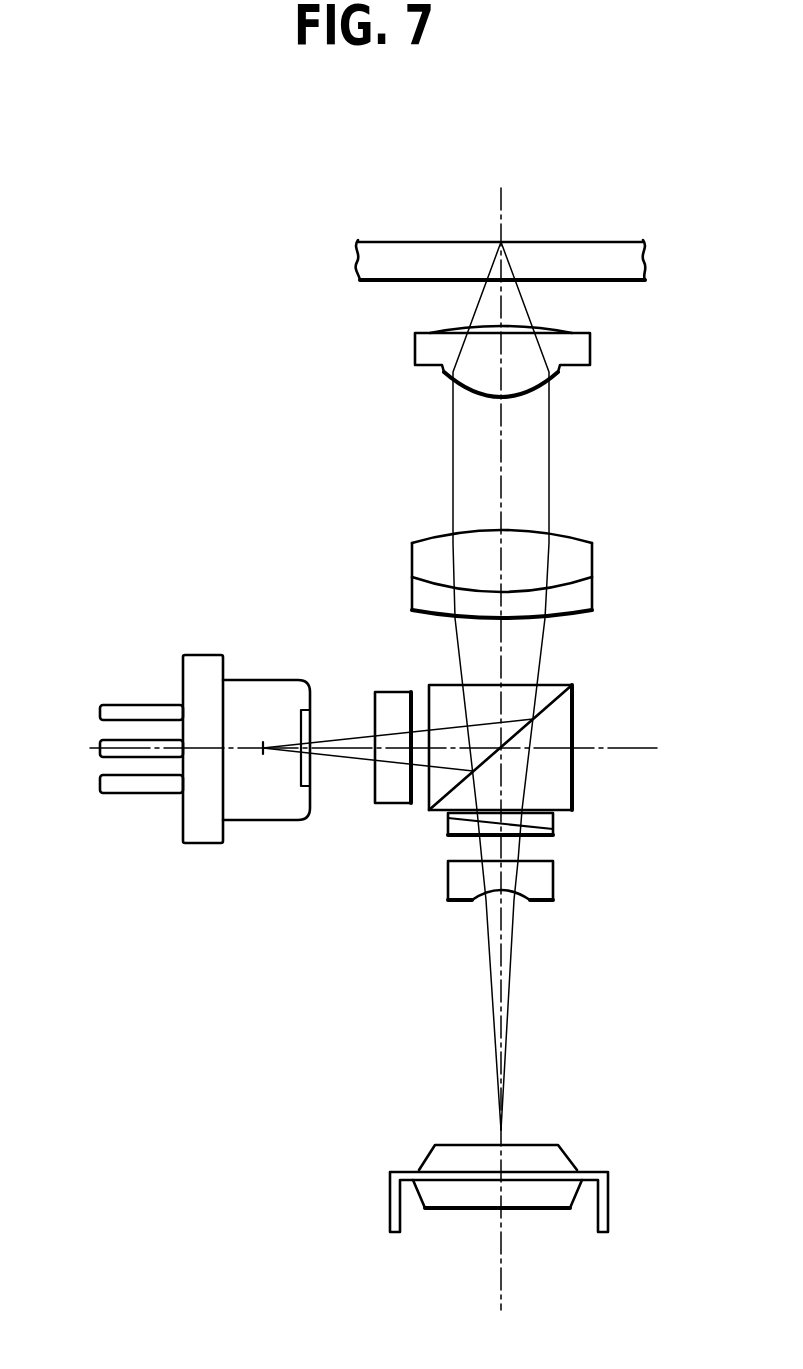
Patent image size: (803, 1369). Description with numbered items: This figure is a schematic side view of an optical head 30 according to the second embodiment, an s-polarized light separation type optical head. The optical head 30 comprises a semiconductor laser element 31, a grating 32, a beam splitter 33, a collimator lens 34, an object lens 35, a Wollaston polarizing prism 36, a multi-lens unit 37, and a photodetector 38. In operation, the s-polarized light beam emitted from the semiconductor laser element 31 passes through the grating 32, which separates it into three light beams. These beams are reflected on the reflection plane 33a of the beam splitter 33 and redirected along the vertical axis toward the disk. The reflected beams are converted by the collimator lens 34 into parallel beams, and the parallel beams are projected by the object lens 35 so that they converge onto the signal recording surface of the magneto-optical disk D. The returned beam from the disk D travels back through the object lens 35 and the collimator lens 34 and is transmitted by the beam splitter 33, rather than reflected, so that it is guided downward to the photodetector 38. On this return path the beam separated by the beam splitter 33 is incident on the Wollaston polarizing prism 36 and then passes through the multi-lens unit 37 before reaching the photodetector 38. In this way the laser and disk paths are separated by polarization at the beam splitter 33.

The optical head 30 is at (144, 318).
The magneto-optical disk D is at (603, 250).
The semiconductor laser element 31 is at (273, 682).
The grating 32 is at (393, 795).
The beam splitter 33 is at (578, 717).
The reflection plane 33a is at (553, 688).
The collimator lens 34 is at (593, 557).
The object lens 35 is at (591, 345).
The Wollaston polarizing prism 36 is at (553, 825).
The multi-lens unit 37 is at (553, 878).
The photodetector 38 is at (581, 1160).